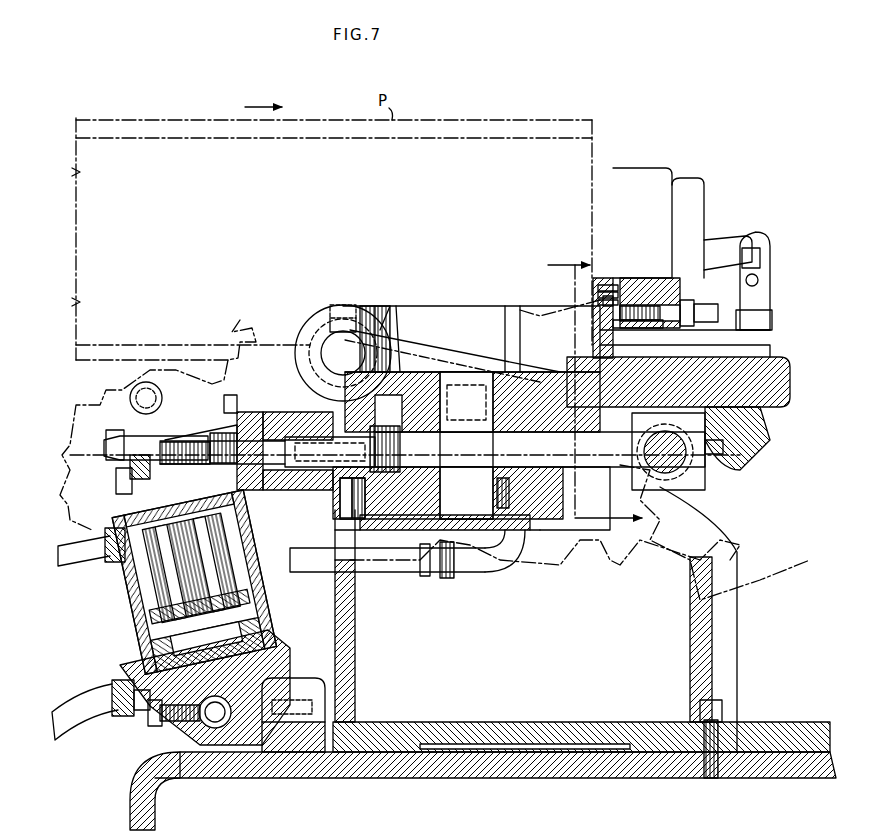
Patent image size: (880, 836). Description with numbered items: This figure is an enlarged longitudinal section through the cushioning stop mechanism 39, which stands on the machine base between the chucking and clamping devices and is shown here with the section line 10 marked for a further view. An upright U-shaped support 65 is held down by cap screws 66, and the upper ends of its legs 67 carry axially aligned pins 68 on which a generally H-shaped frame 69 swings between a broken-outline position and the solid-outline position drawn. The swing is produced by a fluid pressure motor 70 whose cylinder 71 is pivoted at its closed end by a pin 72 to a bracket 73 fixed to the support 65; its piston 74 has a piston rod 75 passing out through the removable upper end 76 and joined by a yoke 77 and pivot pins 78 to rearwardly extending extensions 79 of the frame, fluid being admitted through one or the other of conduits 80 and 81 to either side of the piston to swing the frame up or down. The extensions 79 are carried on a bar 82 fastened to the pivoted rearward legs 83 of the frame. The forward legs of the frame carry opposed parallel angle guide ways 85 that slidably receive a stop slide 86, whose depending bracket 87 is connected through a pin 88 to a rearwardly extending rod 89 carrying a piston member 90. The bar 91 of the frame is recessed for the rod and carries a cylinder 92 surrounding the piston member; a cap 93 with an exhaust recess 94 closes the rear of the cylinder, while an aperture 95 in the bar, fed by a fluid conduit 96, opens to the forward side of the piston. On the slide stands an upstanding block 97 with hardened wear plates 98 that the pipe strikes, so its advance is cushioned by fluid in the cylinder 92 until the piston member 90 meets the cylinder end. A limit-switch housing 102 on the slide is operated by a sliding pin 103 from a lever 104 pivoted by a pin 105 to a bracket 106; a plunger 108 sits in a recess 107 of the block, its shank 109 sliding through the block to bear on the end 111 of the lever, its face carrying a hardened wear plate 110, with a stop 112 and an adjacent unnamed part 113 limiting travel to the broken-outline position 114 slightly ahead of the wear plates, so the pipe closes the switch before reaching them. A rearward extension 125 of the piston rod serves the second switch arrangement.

The section line 10- 10 is at (584, 398).
The cushioning stop mechanism 39 is at (472, 655).
The upright U-shaped support 65 is at (548, 728).
The cap screws 66 is at (730, 700).
The legs 67 is at (300, 597).
The pins 68 is at (330, 310).
The H-shaped frame 69 is at (438, 312).
The fluid pressure motor 70 is at (140, 602).
The cylinder 71 is at (150, 648).
The pin 72 is at (205, 728).
The bracket 73 is at (296, 682).
The piston 74 is at (230, 604).
The piston rod 75 is at (196, 555).
The removable upper end 76 is at (115, 500).
The yoke 77 is at (140, 468).
The pivot pins 78 is at (130, 404).
The rearwardly extending extensions 79 is at (212, 420).
The conduit 80 is at (72, 560).
The conduit 81 is at (72, 720).
The bar 82 is at (248, 412).
The rearward legs 83 is at (410, 316).
The angle guide ways 85 is at (790, 370).
The stop slide 86 is at (752, 420).
The depending bracket 87 is at (716, 444).
The pin 88 is at (688, 466).
The rod 89 is at (537, 449).
The piston member 90 is at (432, 490).
The bar 91 is at (546, 498).
The cylinder 92 is at (440, 518).
The cap 93 is at (340, 490).
The exhaust recess 94 is at (352, 500).
The aperture 95 is at (497, 495).
The fluid conduit 96 is at (482, 570).
The upstanding block 97 is at (636, 280).
The hardened wear plates 98 is at (598, 278).
The housing 102 is at (658, 195).
The sliding pin 103 is at (740, 236).
The lever 104 is at (762, 244).
The pin 105 is at (760, 252).
The bracket 106 is at (760, 268).
The recess 107 is at (622, 300).
The plunger 108 is at (608, 296).
The shank 109 is at (613, 326).
The hardened wear plate 110 is at (598, 294).
The end 111 is at (754, 310).
The stop 112 is at (688, 302).
The washer 113 is at (598, 303).
The broken outline position 114 is at (598, 286).
The rearward extension 125 is at (267, 452).